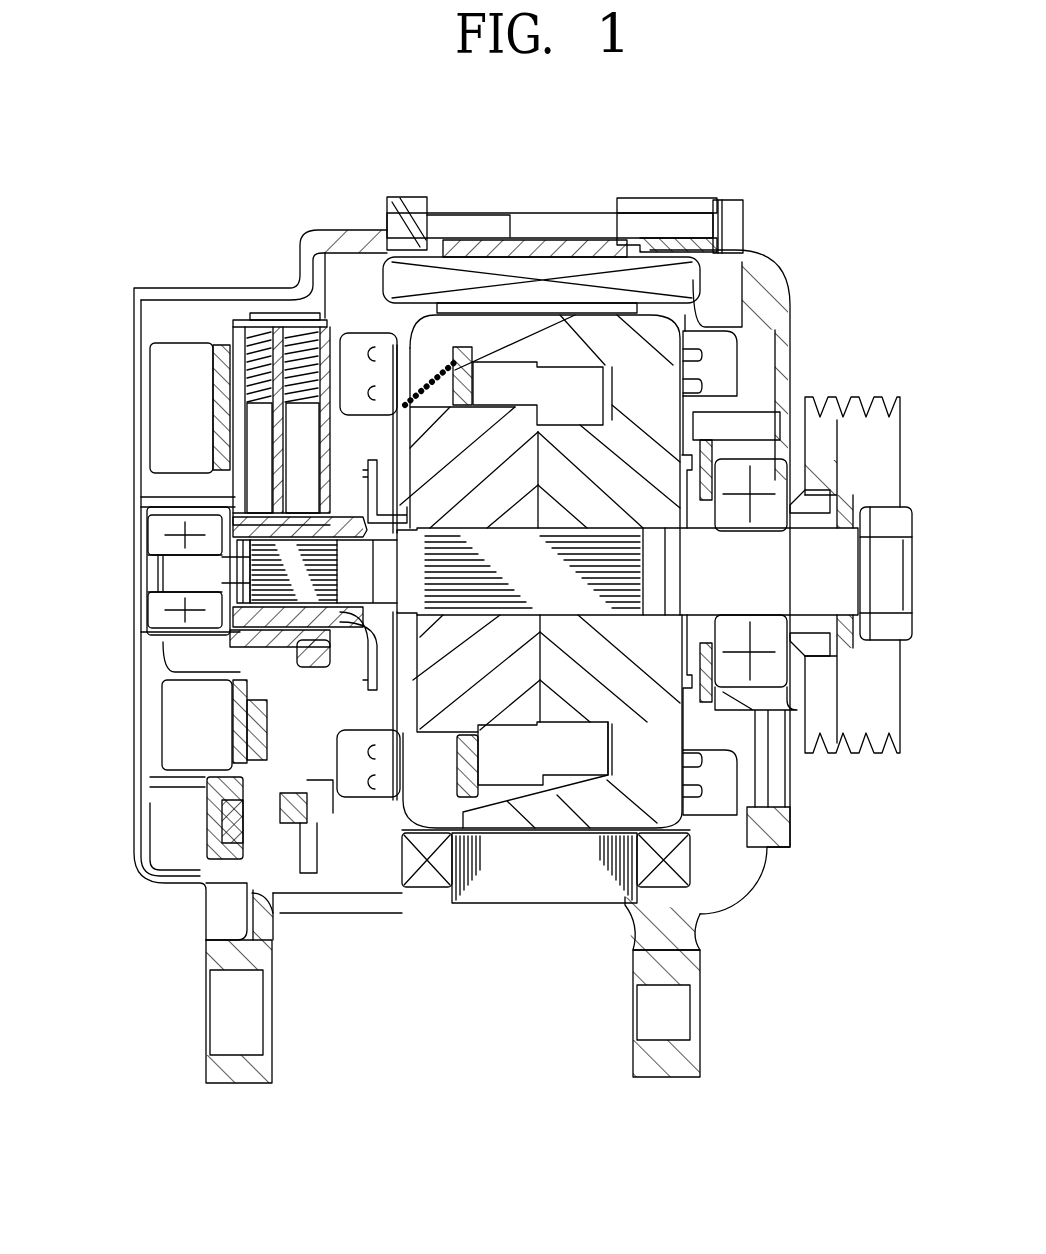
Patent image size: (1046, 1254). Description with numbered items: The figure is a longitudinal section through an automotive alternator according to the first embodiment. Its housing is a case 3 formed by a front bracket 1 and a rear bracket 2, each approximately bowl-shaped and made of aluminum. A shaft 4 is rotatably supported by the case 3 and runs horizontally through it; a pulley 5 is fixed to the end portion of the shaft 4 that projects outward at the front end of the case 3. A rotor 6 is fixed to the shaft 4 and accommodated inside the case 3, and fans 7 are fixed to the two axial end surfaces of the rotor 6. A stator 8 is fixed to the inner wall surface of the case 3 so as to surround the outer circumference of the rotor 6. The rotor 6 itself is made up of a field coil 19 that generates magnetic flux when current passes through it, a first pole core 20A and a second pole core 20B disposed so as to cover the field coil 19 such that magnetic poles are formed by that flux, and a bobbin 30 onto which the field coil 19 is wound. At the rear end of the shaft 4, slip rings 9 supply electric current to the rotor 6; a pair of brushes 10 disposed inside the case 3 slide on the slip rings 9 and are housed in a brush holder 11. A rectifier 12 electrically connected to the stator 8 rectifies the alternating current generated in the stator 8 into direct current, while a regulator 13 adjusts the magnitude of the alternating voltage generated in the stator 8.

The front bracket 1 is at (797, 302).
The rear bracket 2 is at (182, 886).
The case 3 is at (740, 927).
The shaft 4 is at (847, 545).
The pulley 5 is at (888, 395).
The rotor 6 is at (620, 153).
The fans 7 is at (722, 362).
The stator 8 is at (540, 903).
The slip rings 9 is at (258, 530).
The brushes 10 is at (305, 455).
The brush holder 11 is at (258, 310).
The rectifier 12 is at (203, 773).
The regulator 13 is at (218, 382).
The field coil 19 is at (523, 365).
The first pole core 20A is at (600, 322).
The second pole core 20B is at (447, 352).
The bobbin 30 is at (452, 322).